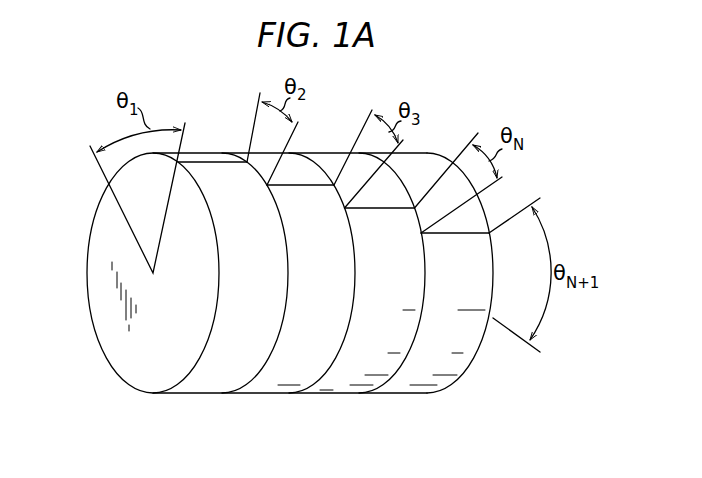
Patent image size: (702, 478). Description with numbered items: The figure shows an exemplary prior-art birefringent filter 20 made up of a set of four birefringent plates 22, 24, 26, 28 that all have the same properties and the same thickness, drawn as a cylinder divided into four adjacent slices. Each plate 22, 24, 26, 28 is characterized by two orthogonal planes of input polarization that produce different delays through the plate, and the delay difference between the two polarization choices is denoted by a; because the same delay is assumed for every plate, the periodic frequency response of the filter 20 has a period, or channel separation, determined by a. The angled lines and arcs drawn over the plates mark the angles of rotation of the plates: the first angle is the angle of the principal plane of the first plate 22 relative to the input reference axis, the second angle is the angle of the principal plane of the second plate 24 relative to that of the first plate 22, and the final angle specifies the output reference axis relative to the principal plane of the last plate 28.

The birefringent filter 20 is at (103, 410).
The birefringent plate 22 is at (196, 384).
The birefringent plate 24 is at (264, 384).
The birefringent plate 26 is at (332, 384).
The birefringent plate 28 is at (401, 384).